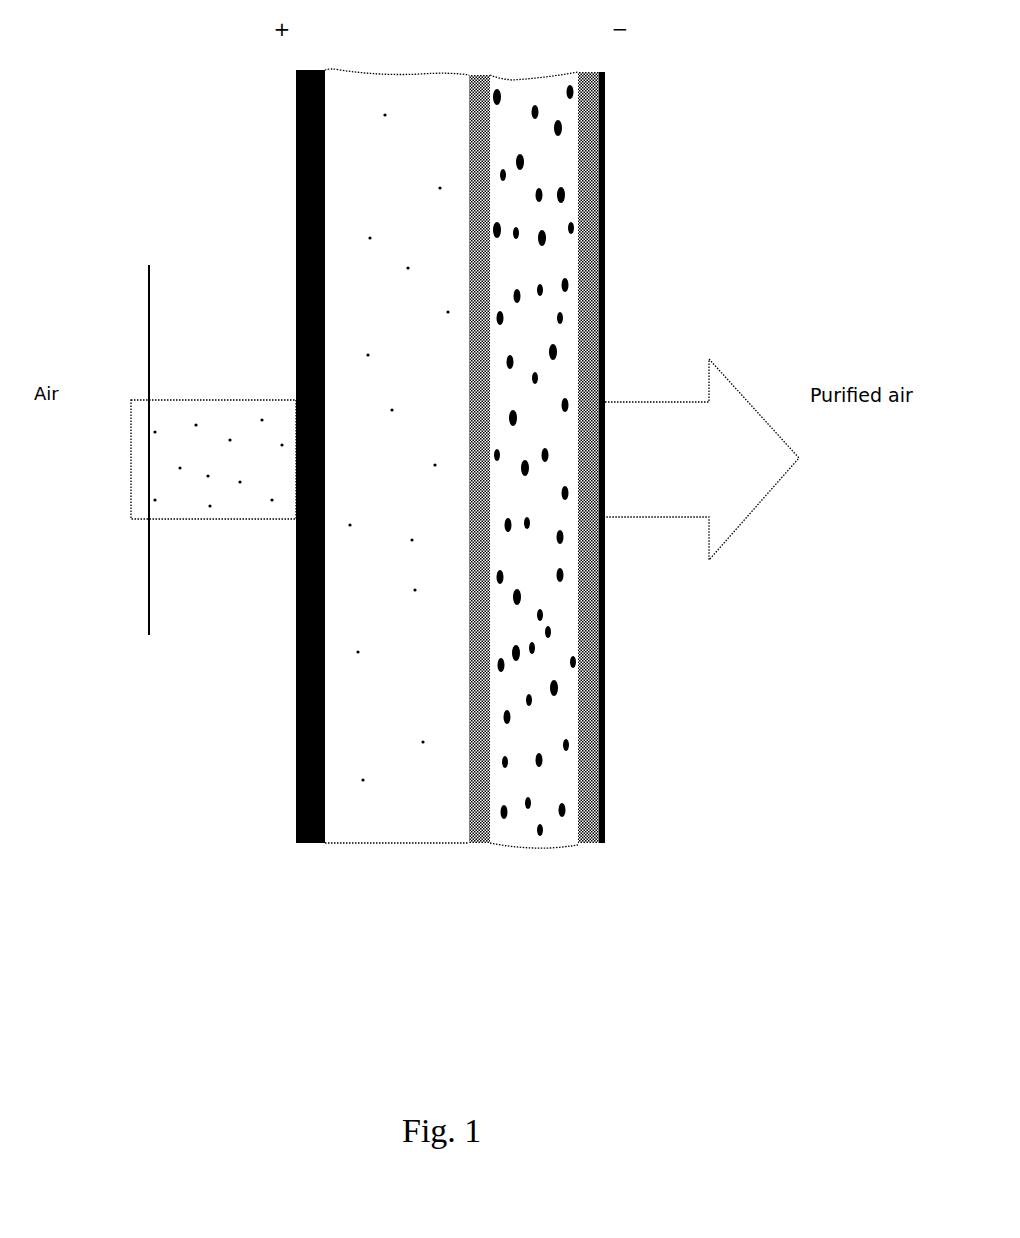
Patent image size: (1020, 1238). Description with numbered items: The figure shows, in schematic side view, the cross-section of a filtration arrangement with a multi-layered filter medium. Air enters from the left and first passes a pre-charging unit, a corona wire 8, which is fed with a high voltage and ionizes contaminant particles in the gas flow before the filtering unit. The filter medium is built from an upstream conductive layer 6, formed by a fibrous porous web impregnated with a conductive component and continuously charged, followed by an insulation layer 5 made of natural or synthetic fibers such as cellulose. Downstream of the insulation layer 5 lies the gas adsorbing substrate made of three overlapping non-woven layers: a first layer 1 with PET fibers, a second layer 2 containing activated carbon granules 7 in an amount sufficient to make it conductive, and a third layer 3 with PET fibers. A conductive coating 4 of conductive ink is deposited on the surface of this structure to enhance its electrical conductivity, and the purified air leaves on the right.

The first layer 1 is at (585, 845).
The second layer 2 is at (534, 847).
The third layer 3 is at (480, 845).
The conductive coating 4 is at (600, 845).
The insulation layer 5 is at (383, 845).
The conductive layer 6 is at (330, 845).
The activated carbon granules 7 is at (568, 745).
The corona wire 8 is at (124, 638).